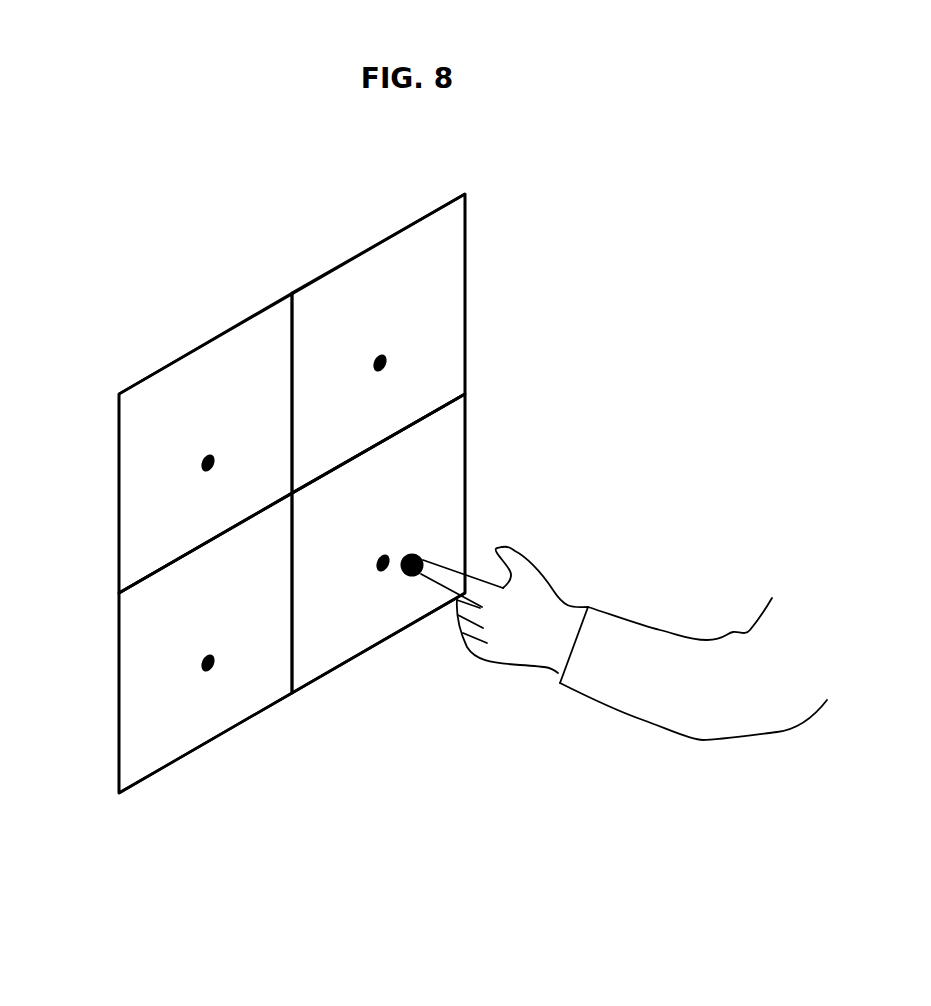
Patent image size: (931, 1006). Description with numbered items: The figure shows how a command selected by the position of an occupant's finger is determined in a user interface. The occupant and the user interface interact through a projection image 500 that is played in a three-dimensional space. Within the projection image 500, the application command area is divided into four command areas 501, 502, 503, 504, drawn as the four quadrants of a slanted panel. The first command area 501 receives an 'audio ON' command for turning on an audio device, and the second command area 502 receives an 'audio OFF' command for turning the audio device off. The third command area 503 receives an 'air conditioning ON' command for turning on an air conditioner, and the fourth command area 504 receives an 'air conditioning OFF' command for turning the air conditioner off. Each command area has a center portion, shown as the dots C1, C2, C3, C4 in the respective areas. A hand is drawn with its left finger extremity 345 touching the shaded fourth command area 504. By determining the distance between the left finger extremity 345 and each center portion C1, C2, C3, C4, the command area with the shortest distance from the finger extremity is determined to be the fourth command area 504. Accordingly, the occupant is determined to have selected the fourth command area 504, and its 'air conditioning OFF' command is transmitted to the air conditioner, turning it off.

The projection image 500 is at (277, 288).
The first command area 501 is at (183, 357).
The second command area 502 is at (373, 247).
The third command area 503 is at (192, 753).
The fourth command area 504 is at (467, 458).
The center portion of the first command area C1 is at (205, 470).
The center portion of the second command area C2 is at (386, 365).
The center portion of the third command area C3 is at (206, 671).
The center portion of the fourth command area C4 is at (385, 572).
The left finger extremity 345 is at (420, 553).